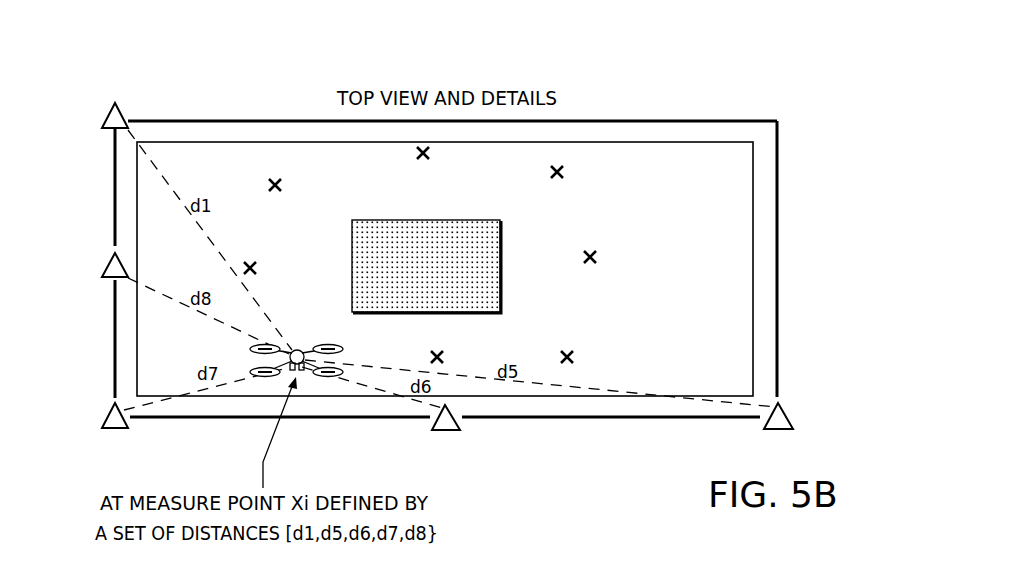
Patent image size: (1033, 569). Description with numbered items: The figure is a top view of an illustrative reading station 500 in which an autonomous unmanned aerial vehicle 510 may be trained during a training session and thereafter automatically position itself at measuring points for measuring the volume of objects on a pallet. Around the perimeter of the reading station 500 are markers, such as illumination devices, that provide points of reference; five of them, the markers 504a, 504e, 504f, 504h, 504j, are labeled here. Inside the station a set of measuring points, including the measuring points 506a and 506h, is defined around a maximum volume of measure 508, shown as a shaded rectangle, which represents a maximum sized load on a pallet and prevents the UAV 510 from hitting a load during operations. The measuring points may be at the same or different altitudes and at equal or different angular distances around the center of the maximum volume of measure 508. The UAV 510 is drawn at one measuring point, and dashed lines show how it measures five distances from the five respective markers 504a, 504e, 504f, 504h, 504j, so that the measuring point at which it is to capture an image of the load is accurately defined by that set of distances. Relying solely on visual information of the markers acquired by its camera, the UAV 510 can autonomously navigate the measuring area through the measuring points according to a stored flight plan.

The reading station 500 is at (668, 79).
The marker 504a is at (110, 131).
The marker 504e is at (110, 279).
The marker 504f is at (112, 430).
The marker 504h is at (430, 424).
The marker 504j is at (786, 408).
The measuring point 506a is at (413, 158).
The measuring point 506h is at (280, 194).
The maximum volume of measure 508 is at (501, 268).
The autonomous unmanned aerial vehicle 510 is at (300, 348).